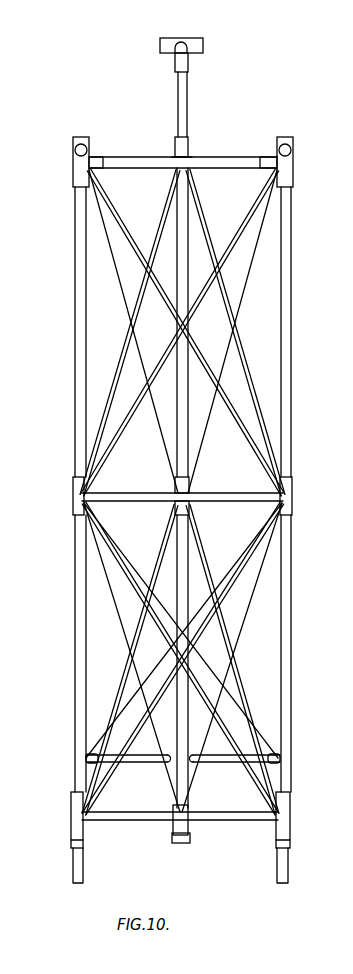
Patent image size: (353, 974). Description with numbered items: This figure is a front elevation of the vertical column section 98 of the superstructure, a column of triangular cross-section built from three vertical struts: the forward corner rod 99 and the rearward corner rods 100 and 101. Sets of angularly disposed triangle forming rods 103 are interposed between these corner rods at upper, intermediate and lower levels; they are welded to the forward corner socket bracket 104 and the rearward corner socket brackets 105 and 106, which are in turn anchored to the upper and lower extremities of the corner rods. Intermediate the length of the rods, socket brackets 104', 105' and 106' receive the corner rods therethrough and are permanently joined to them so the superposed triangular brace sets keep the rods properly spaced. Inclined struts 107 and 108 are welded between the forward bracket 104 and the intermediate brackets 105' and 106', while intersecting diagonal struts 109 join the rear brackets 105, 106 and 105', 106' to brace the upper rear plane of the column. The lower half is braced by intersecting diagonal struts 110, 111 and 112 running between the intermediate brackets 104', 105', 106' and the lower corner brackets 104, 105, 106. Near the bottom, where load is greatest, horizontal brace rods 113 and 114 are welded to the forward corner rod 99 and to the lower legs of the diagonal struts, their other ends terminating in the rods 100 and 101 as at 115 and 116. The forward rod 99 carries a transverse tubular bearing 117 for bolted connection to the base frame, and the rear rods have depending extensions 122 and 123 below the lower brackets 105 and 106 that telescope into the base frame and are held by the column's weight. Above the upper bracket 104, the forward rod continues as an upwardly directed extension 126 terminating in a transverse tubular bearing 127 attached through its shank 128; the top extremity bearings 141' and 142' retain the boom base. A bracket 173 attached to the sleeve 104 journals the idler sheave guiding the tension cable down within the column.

The vertical column section 98 is at (293, 224).
The forward vertical corner rod 99 is at (190, 228).
The vertical corner rod 100 is at (290, 246).
The vertical corner rod 101 is at (82, 290).
The triangle forming rod 103 is at (210, 160).
The forward corner socket bracket 104 is at (183, 484).
The intermediate rod socket bracket 104' is at (159, 486).
The rearward corner socket bracket 105 is at (309, 492).
The intermediate rod socket bracket 105' is at (313, 496).
The rearward corner socket bracket 106 is at (54, 492).
The intermediate rod socket bracket 106' is at (55, 496).
The inclined strut 107 is at (228, 303).
The inclined strut 108 is at (135, 315).
The intersecting diagonal struts 109 is at (250, 410).
The intersecting diagonal strut 110 is at (252, 580).
The intersecting diagonal strut 111 is at (115, 598).
The intersecting diagonal strut 112 is at (177, 658).
The horizontal brace rod 113 is at (250, 750).
The horizontal brace rod 114 is at (132, 758).
The brace rod termination 115 is at (188, 762).
The brace rod termination 116 is at (90, 758).
The transverse tubular bearing 117 is at (185, 843).
The depending extension 122 is at (288, 878).
The depending extension 123 is at (75, 876).
The upwardly directed extension 126 is at (188, 99).
The transverse tubular bearing 127 is at (192, 40).
The shank 128 is at (188, 62).
The top extremity bearing 141' is at (309, 122).
The top extremity bearing 142' is at (63, 121).
The bracket 173 is at (193, 155).